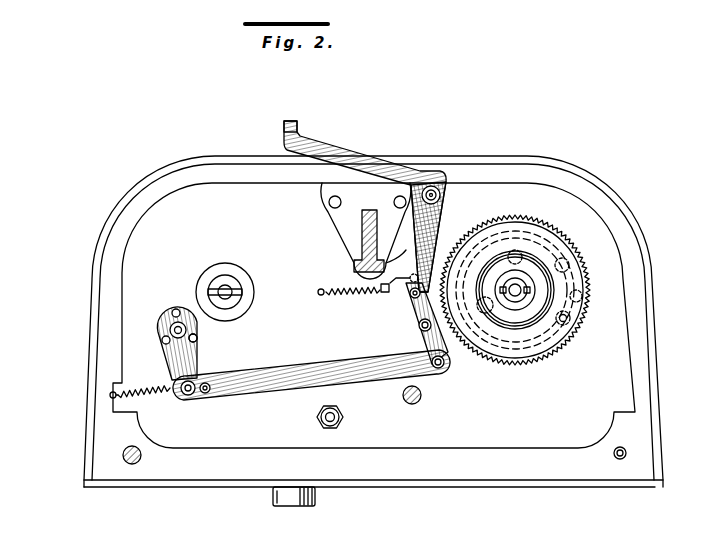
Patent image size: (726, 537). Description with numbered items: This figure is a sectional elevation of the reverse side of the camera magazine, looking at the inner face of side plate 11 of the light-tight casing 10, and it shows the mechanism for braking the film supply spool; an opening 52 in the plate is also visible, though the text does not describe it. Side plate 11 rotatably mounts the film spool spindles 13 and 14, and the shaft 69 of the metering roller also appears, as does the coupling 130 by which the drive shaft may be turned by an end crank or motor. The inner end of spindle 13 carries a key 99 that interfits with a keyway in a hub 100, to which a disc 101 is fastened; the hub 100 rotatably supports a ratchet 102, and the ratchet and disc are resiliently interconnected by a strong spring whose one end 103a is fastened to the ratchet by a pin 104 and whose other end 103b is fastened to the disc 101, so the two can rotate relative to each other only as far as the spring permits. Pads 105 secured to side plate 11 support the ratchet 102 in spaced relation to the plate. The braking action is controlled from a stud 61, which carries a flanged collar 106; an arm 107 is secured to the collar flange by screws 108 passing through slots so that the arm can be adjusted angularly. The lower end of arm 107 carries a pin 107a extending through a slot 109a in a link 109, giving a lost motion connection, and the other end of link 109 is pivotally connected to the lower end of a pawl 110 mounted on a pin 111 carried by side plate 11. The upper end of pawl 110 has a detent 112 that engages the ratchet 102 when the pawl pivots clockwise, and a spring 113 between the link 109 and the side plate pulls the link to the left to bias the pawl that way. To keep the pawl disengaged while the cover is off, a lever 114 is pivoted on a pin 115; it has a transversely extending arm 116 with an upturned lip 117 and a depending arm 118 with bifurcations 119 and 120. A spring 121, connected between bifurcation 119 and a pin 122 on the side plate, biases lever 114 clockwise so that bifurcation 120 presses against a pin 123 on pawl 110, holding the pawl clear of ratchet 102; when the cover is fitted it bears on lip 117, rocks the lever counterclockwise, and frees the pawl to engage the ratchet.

The light-tight casing 10 is at (113, 208).
The side plate 11 is at (128, 272).
The film spool spindle 13 is at (511, 284).
The film spool spindle 14 is at (225, 290).
The hole 52 is at (418, 403).
The stud 61 is at (187, 330).
The shaft 69 is at (126, 449).
The key 99 is at (522, 290).
The hub 100 is at (524, 276).
The disc 101 is at (542, 332).
The ratchet 102 is at (460, 258).
The spring end 103a is at (582, 292).
The spring end 103b is at (571, 316).
The pin 104 is at (567, 260).
The pads 105 is at (515, 250).
The flanged collar 106 is at (197, 341).
The arm 107 is at (168, 354).
The pin 107a is at (188, 395).
The screws 108 is at (173, 311).
The link 109 is at (302, 370).
The slot 109a is at (208, 393).
The pawl 110 is at (425, 343).
The pin 111 is at (418, 325).
The detent 112 is at (414, 274).
The spring 113 is at (158, 384).
The lever 114 is at (414, 173).
The pin 115 is at (433, 190).
The transversely extending arm 116 is at (343, 152).
The upturned lip 117 is at (298, 124).
The depending arm 118 is at (433, 226).
The bifurcation 119 is at (384, 294).
The bifurcation 120 is at (496, 292).
The spring 121 is at (350, 293).
The pin 122 is at (318, 290).
The pin 123 is at (411, 297).
The coupling 130 is at (274, 496).